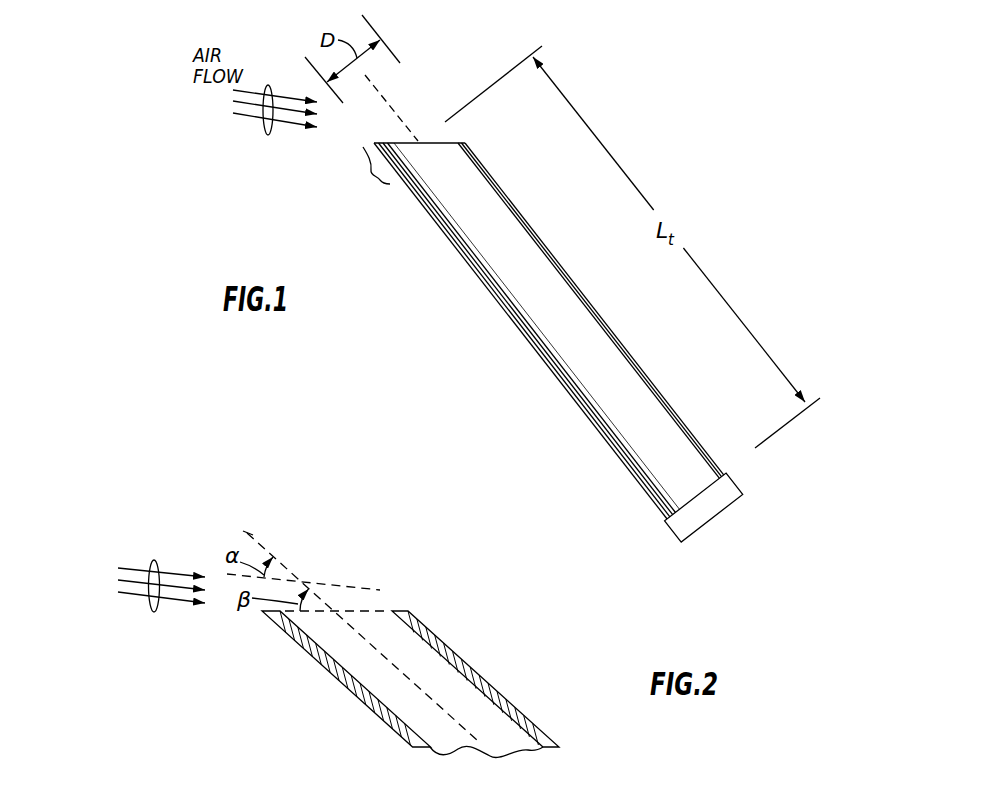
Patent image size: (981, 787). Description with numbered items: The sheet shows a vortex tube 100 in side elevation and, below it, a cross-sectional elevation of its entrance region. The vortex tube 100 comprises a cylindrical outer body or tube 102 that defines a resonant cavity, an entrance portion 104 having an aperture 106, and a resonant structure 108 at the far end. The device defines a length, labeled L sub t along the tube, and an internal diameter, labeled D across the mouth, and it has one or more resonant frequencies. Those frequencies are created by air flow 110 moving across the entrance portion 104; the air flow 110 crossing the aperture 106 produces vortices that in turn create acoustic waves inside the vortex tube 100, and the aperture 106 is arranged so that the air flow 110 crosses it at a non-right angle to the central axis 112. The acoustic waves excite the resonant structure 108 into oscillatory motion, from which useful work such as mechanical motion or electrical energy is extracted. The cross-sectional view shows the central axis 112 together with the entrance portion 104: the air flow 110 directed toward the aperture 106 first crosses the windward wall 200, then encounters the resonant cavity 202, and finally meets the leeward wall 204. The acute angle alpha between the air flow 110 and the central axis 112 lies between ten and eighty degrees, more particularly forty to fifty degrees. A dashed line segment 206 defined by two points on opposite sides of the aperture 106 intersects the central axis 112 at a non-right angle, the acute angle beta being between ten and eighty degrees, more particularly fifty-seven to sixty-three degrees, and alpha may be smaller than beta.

In FIG. 1, the vortex tube 100 is at (613, 309).
In FIG. 1, the tube 102 is at (542, 342).
In FIG. 1, the entrance portion 104 is at (390, 184).
In FIG. 2, the entrance portion 104 is at (307, 708).
In FIG. 1, the aperture 106 is at (428, 132).
In FIG. 2, the aperture 106 is at (395, 582).
In FIG. 1, the resonant structure 108 is at (732, 478).
In FIG. 1, the air flow 110 is at (267, 135).
In FIG. 2, the air flow 110 is at (153, 608).
In FIG. 1, the central axis 112 is at (385, 98).
In FIG. 2, the central axis 112 is at (250, 533).
In FIG. 2, the windward wall 200 is at (267, 613).
In FIG. 2, the resonant cavity 202 is at (477, 713).
In FIG. 2, the leeward wall 204 is at (442, 640).
In FIG. 2, the line segment 206 is at (375, 610).